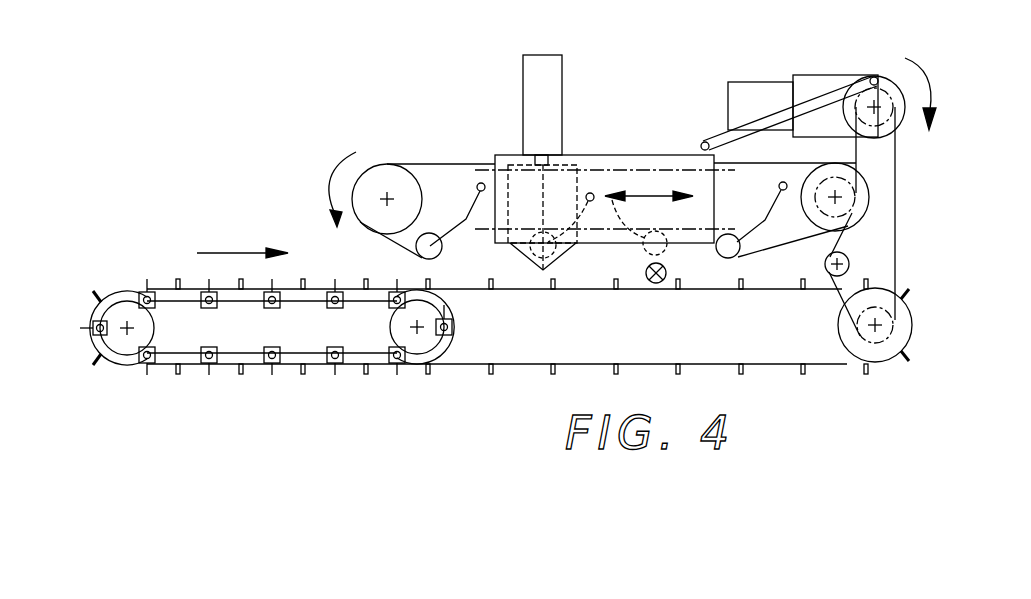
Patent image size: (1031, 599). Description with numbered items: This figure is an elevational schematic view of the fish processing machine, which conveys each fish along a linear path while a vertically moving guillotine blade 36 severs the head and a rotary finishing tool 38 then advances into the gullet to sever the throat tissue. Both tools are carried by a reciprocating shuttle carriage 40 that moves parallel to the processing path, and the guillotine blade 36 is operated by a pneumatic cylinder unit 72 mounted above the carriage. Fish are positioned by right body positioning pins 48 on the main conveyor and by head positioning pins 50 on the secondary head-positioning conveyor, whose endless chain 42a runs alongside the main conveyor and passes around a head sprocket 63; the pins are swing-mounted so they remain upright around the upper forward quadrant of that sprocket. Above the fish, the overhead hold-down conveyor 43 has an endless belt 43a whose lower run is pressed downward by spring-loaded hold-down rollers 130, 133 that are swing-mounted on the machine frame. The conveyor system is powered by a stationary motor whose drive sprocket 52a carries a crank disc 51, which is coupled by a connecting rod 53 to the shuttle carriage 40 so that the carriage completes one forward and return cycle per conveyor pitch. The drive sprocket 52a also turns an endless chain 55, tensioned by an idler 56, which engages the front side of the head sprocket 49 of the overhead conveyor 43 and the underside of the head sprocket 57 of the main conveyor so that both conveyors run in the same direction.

The guillotine blade 36 is at (557, 250).
The rotary finishing tool 38 is at (667, 270).
The reciprocating shuttle carriage 40 is at (722, 200).
The endless chain 42a is at (252, 374).
The overhead hold-down conveyor 43 is at (421, 148).
The endless belt 43a is at (758, 244).
The right body positioning pin 48 is at (305, 288).
The head sprocket 49 is at (858, 194).
The head positioning pin 50 is at (147, 270).
The crank disc 51 is at (893, 118).
The drive sprocket 52a is at (885, 75).
The connecting rod 53 is at (722, 137).
The endless chain 55 is at (896, 248).
The idler 56 is at (845, 255).
The head sprocket 57 is at (908, 312).
The head sprocket 63 is at (446, 336).
The pneumatic cylinder unit 72 is at (553, 111).
The hold-down roller 130 is at (422, 256).
The hold-down roller 133 is at (741, 246).